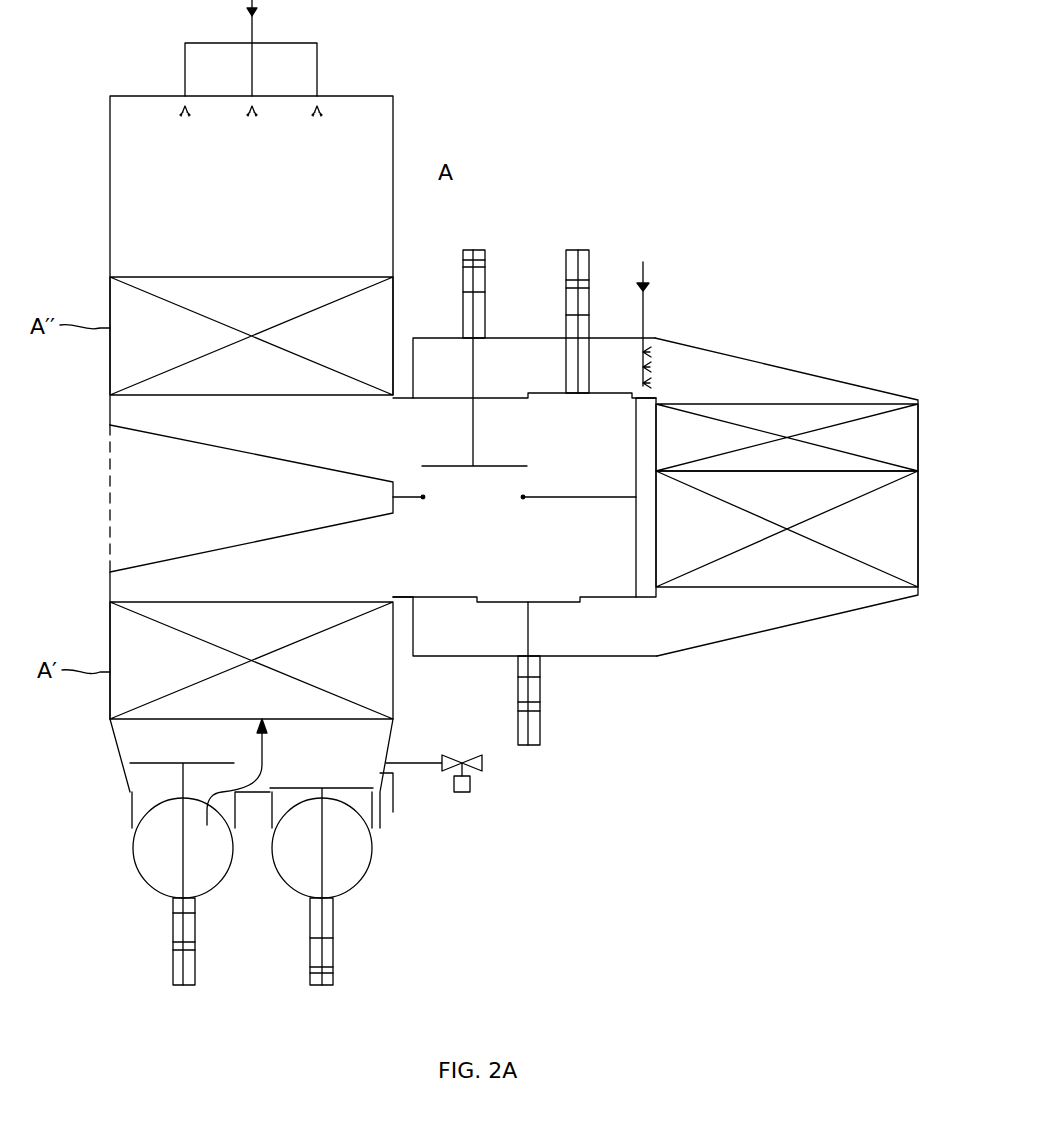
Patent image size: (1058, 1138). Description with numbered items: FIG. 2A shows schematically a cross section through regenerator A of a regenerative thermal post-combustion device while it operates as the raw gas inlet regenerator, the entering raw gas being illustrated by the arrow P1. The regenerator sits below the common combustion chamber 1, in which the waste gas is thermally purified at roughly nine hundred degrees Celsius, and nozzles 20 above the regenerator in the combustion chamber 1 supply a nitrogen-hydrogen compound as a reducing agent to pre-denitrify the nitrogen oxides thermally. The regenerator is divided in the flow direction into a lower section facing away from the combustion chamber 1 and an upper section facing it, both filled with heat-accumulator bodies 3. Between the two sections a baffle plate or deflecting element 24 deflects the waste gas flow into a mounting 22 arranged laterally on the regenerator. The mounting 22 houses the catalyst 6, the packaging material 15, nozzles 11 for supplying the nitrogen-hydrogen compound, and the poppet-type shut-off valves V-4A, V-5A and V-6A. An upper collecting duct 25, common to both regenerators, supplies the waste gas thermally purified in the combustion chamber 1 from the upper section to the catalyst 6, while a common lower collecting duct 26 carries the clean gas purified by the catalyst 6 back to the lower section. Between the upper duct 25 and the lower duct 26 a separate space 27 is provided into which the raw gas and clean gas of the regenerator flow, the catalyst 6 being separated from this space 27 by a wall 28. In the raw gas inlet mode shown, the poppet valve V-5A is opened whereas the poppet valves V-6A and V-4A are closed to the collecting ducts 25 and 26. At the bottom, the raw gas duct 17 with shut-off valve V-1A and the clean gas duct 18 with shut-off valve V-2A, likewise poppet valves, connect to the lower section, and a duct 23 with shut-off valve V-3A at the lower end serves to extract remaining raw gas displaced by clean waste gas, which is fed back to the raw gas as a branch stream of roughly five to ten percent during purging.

The combustion chamber 1 is at (260, 204).
The heat-accumulator bodies 3 is at (360, 348).
The catalyst 6 is at (787, 529).
The nozzles 11 is at (650, 356).
The packaging material 15 is at (787, 437).
The raw gas duct 17 is at (150, 882).
The clean gas duct 18 is at (368, 875).
The nozzles 20 is at (318, 100).
The mounting 22 is at (795, 637).
The duct 23 is at (393, 812).
The deflecting element 24 is at (301, 535).
The upper collecting duct 25 is at (541, 350).
The lower collecting duct 26 is at (580, 640).
The space 27 is at (486, 548).
The wall 28 is at (646, 535).
The arrow P1 is at (262, 748).
The shut-off valve V-1A is at (182, 859).
The shut-off valve V-2A is at (321, 872).
The shut-off valve V-3A is at (440, 760).
The shut-off valve V-4A is at (528, 659).
The shut-off valve V-5A is at (474, 370).
The shut-off valve V-6A is at (582, 335).